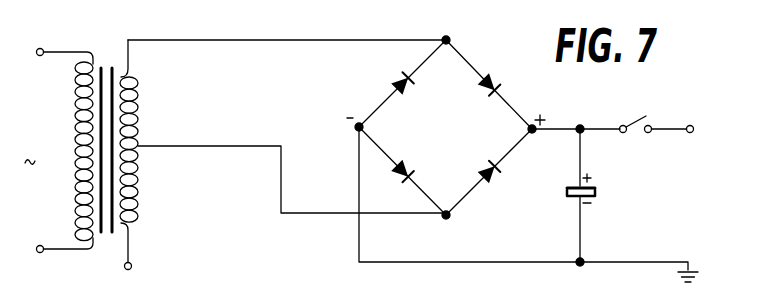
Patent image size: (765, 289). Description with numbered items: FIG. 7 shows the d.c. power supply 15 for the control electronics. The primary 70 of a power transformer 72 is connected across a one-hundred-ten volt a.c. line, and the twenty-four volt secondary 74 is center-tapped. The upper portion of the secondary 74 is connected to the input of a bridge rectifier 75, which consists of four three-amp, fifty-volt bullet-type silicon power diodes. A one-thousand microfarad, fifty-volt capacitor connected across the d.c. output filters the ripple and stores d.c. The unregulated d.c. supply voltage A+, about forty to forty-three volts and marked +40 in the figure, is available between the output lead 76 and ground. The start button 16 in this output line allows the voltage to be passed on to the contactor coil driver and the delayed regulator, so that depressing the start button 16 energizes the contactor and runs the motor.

The power supply transformer 15 is at (320, 257).
The primary 70 is at (78, 192).
The power transformer 72 is at (115, 264).
The secondary 74 is at (137, 201).
The bridge rectifier 75 is at (458, 138).
The start button 16 is at (640, 123).
The output lead 76 is at (567, 194).
The +40 volt output terminal 40 is at (710, 133).